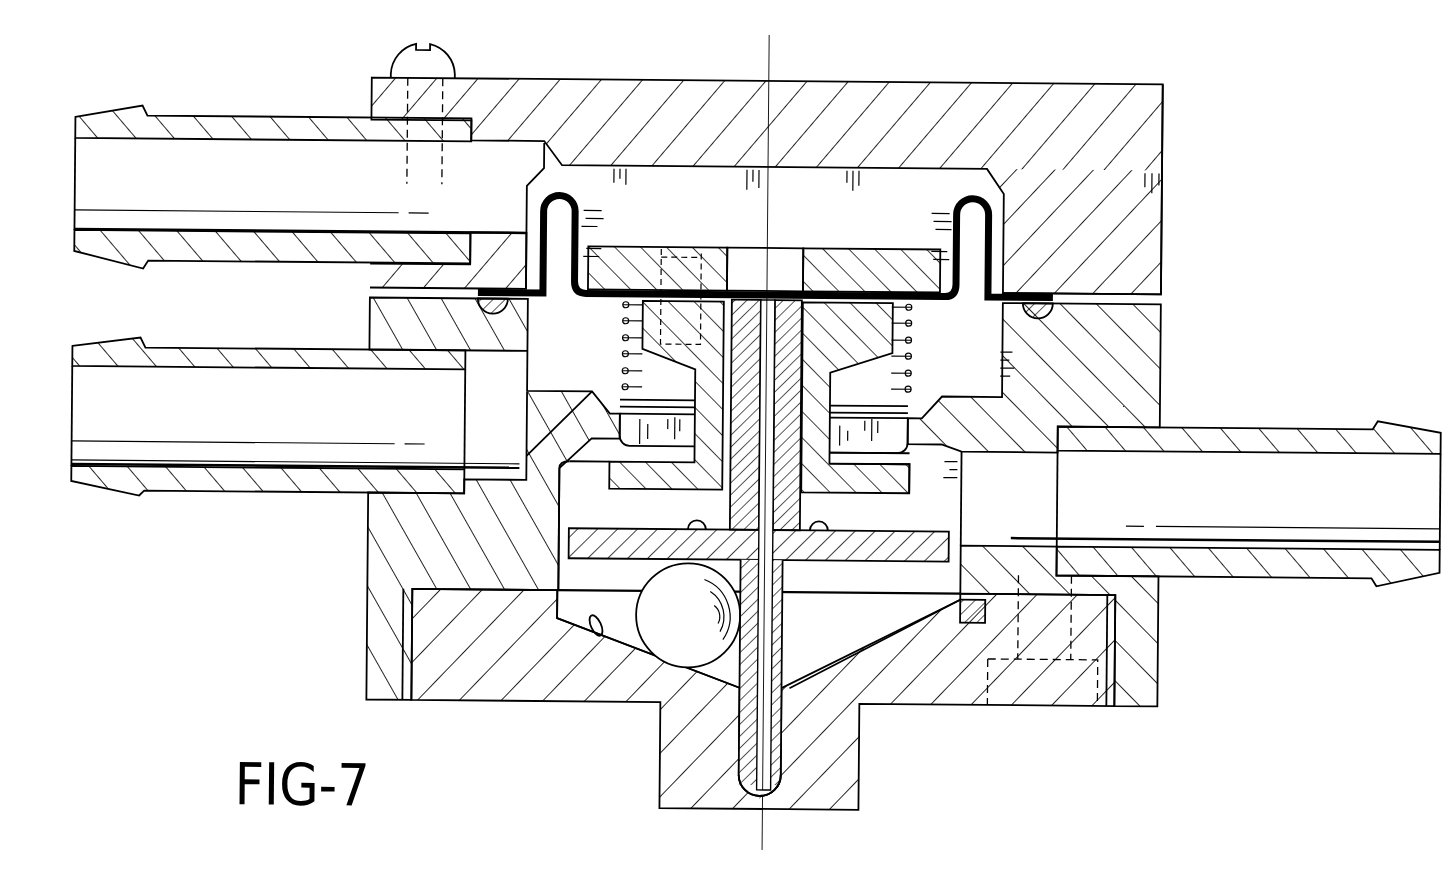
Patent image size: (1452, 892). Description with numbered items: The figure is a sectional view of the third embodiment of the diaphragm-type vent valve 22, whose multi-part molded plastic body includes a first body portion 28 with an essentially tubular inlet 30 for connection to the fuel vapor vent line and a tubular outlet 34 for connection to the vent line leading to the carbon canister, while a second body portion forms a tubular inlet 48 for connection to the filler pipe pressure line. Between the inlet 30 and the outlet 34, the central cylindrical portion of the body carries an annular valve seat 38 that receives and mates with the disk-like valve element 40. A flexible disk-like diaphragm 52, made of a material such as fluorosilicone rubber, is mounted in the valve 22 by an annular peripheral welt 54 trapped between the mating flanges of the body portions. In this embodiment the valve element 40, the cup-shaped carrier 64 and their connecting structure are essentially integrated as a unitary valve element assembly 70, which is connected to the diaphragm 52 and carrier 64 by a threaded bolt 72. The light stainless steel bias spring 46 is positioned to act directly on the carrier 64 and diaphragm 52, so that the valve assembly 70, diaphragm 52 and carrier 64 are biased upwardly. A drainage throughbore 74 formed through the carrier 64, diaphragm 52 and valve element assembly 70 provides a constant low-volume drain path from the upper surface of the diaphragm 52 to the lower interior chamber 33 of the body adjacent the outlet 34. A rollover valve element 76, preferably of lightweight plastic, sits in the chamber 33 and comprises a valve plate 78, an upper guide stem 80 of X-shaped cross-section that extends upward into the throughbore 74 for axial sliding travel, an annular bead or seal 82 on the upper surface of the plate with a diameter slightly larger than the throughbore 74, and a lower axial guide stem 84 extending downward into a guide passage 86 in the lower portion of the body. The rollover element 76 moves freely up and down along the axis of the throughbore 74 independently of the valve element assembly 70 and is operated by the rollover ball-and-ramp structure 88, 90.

The vent valve 22 is at (915, 79).
The first molded plastic body portion 28 is at (207, 484).
The tubular inlet 30 is at (228, 375).
The lower interior chamber 33 is at (962, 615).
The outlet 34 is at (1236, 445).
The annular valve seat 38 is at (868, 442).
The valve element 40 is at (845, 484).
The bias spring 46 is at (890, 356).
The tubular inlet 48 is at (186, 127).
The diaphragm 52 is at (578, 236).
The annular peripheral welt 54 is at (1063, 257).
The cup-shaped carrier 64 is at (845, 270).
The valve element assembly 70 is at (695, 392).
The threaded bolt 72 is at (707, 251).
The drainage throughbore 74 is at (777, 262).
The rollover valve element 76 is at (790, 598).
The valve plate 78 is at (565, 553).
The upper guide stem 80 is at (733, 497).
The annular bead or seal 82 is at (826, 562).
The lower axial guide stem 84 is at (742, 700).
The guide passage 86 is at (752, 752).
The rollover ball-and-ramp structure 88 is at (602, 703).
The rollover ball-and-ramp structure 90 is at (598, 640).